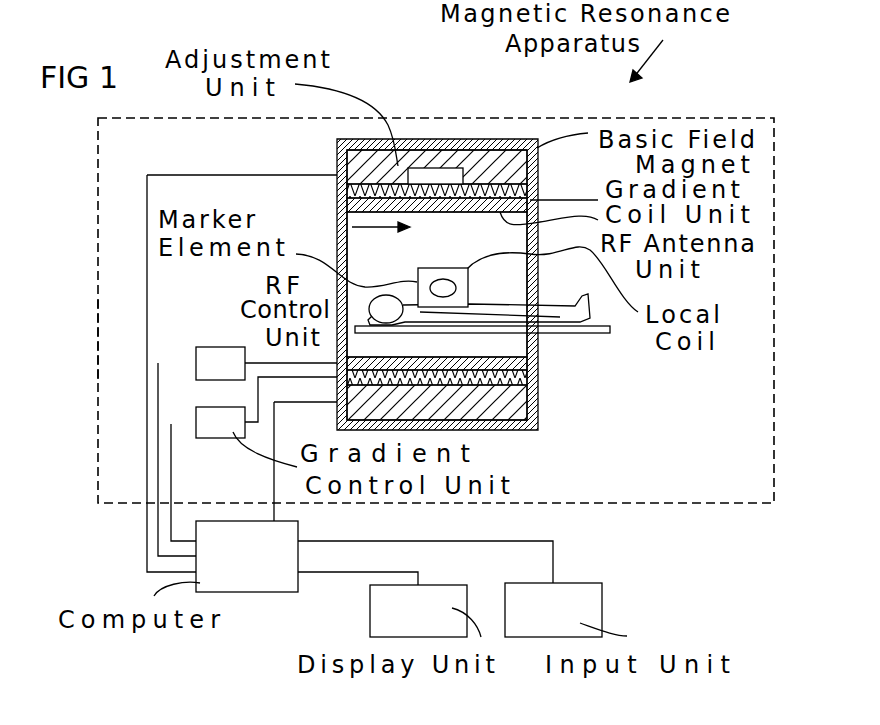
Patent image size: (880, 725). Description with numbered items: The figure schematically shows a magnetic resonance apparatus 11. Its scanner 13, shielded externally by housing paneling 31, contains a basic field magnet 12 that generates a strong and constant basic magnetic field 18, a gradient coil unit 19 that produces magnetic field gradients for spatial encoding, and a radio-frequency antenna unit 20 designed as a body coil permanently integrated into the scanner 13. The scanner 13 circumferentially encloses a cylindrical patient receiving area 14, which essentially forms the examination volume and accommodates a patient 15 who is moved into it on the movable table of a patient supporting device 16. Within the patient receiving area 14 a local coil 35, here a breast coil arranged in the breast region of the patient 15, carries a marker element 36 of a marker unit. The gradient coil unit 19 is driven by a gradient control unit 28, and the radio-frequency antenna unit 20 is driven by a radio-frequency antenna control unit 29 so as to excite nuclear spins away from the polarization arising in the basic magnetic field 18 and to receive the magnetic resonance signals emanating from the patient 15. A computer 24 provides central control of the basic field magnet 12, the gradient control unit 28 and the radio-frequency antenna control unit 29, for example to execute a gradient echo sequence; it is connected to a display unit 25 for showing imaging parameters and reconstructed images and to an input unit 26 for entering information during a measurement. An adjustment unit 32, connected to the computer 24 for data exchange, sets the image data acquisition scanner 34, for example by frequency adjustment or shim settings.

The magnetic resonance apparatus 11 is at (676, 108).
The basic field magnet 12 is at (530, 170).
The scanner 13 is at (421, 253).
The patient receiving area 14 is at (514, 242).
The patient 15 is at (577, 318).
The patient supporting device 16 is at (598, 334).
The basic magnetic field 18 is at (378, 234).
The gradient coil unit 19 is at (535, 195).
The radio-frequency antenna unit 20 is at (336, 207).
The computer 24 is at (245, 593).
The display unit 25 is at (370, 612).
The input unit 26 is at (602, 610).
The gradient control unit 28 is at (223, 440).
The radio-frequency antenna control unit 29 is at (233, 347).
The housing paneling 31 is at (482, 139).
The adjustment unit 32 is at (414, 166).
The image data acquisition scanner 34 is at (98, 337).
The local coil 35 is at (445, 268).
The marker element 36 is at (469, 288).